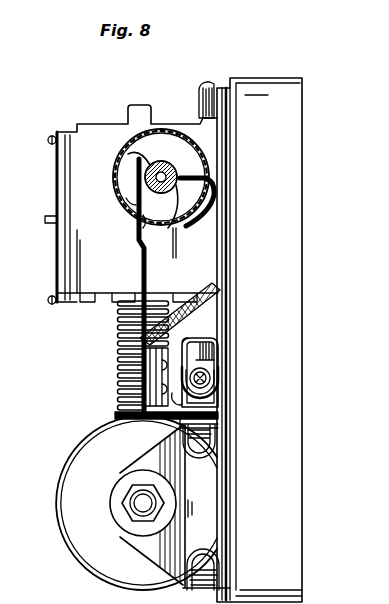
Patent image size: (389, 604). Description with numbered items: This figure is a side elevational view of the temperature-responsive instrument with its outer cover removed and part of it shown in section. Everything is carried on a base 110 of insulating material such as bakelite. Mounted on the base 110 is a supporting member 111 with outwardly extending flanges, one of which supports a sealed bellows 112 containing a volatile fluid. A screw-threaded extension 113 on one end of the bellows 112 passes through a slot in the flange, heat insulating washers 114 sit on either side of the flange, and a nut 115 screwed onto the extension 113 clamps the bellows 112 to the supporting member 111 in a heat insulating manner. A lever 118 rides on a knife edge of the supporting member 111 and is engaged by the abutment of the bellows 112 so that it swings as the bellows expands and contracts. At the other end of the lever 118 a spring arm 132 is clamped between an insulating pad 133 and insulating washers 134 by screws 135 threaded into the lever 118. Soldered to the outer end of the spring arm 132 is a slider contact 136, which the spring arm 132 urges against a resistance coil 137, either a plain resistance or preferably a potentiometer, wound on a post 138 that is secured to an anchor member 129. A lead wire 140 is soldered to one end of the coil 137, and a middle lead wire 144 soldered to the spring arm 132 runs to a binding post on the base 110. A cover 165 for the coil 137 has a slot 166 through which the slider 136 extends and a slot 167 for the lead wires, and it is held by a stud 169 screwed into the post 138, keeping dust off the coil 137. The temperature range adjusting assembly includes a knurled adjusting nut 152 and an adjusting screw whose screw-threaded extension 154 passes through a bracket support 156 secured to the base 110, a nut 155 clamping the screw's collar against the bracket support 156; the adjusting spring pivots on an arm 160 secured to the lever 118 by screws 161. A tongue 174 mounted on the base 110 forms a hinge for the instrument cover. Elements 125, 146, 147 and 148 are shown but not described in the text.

The base 110 is at (287, 407).
The supporting member 111 is at (208, 526).
The sealed bellows 112 is at (105, 567).
The screw-threaded extension 113 is at (147, 507).
The heat insulating washers 114 is at (133, 485).
The nut 115 is at (127, 507).
The lever 118 is at (117, 414).
The coil spring 125 is at (118, 353).
The anchor member 129 is at (97, 133).
The spring arm 132 is at (147, 282).
The insulating pad 133 is at (207, 323).
The insulating washers 134 is at (125, 371).
The screws 135 is at (135, 389).
The slider contact 136 is at (143, 220).
The resistance coil 137 is at (124, 152).
The post 138 is at (177, 233).
The lead wire 140 is at (220, 176).
The middle lead wire 144 is at (228, 290).
The tab 146 is at (55, 224).
The side wall 147 is at (57, 200).
The hooks 148 is at (50, 140).
The knurled adjusting nut 152 is at (218, 395).
The screw-threaded extension 154 is at (218, 378).
The nut 155 is at (207, 370).
The bracket support 156 is at (203, 352).
The arm 160 is at (182, 343).
The screws 161 is at (172, 393).
The cover 165 is at (124, 175).
The slot 166 is at (127, 198).
The slot 167 is at (203, 172).
The stud 169 is at (163, 172).
The tongue 174 is at (213, 84).